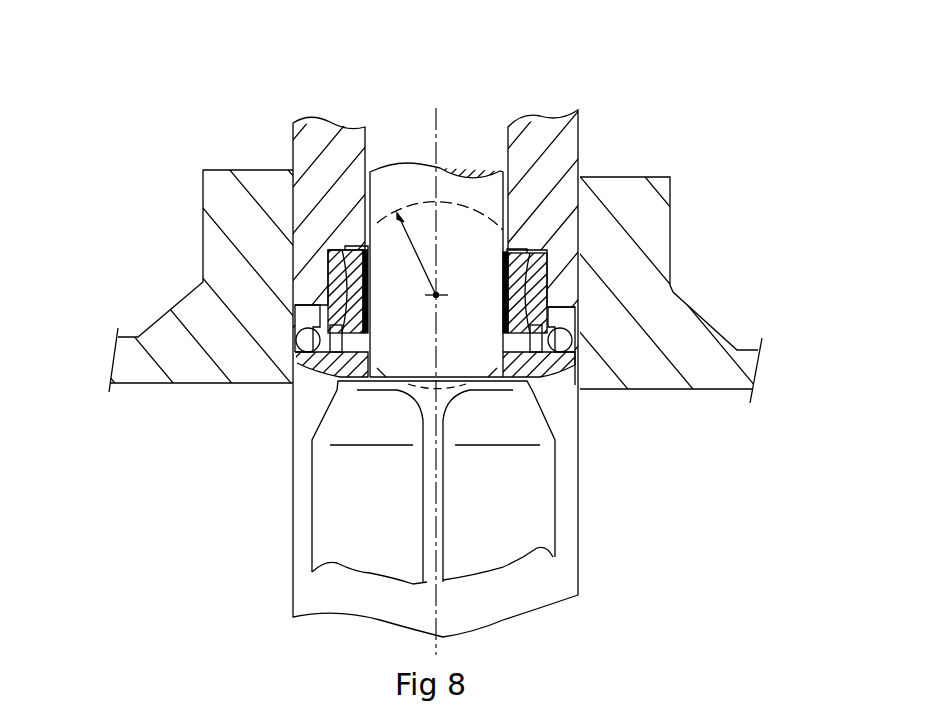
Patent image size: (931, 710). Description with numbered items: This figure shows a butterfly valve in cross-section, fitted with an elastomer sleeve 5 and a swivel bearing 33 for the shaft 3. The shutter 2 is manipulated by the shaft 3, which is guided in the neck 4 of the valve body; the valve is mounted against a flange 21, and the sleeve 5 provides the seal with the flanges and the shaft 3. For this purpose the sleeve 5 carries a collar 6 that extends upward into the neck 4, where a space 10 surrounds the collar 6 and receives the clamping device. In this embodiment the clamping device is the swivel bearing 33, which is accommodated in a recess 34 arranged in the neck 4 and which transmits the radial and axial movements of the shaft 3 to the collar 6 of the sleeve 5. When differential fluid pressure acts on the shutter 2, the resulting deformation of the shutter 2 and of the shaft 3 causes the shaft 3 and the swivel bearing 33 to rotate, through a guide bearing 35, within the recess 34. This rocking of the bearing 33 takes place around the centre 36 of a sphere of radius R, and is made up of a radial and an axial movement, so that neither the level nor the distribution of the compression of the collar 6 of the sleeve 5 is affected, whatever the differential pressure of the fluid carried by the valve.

The shutter 2 is at (345, 493).
The shaft 3 is at (390, 201).
The neck 4 is at (385, 147).
The sleeve 5 is at (290, 372).
The collar 6 is at (580, 388).
The space 10 is at (550, 325).
The flange 21 is at (620, 193).
The swivel bearing 33 is at (440, 292).
The recess 34 is at (545, 293).
The guide bearing 35 is at (330, 293).
The centre of the sphere 36 is at (547, 253).